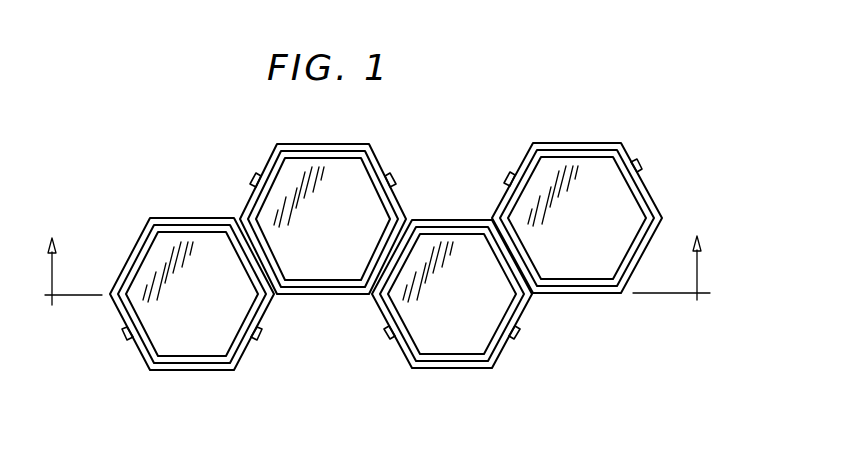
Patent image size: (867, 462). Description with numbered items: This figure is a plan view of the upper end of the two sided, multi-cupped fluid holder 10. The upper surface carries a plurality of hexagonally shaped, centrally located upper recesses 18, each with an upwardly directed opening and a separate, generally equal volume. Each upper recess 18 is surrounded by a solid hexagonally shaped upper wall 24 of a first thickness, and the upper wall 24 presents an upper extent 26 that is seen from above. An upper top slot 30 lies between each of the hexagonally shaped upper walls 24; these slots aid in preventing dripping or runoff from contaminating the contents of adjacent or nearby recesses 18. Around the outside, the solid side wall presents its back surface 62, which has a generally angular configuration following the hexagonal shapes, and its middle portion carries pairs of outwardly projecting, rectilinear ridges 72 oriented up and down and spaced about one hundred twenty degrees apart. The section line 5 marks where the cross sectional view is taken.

The two sided, multi-cupped fluid holder 10 is at (216, 130).
The upper recess 18 is at (605, 207).
The upper wall 24 is at (628, 153).
The upper extent 26 is at (404, 368).
The upper top slot 30 is at (403, 225).
The back surface 62 is at (190, 206).
The outwardly projecting ridge 72 is at (122, 338).
The section line 5- 5 is at (377, 285).